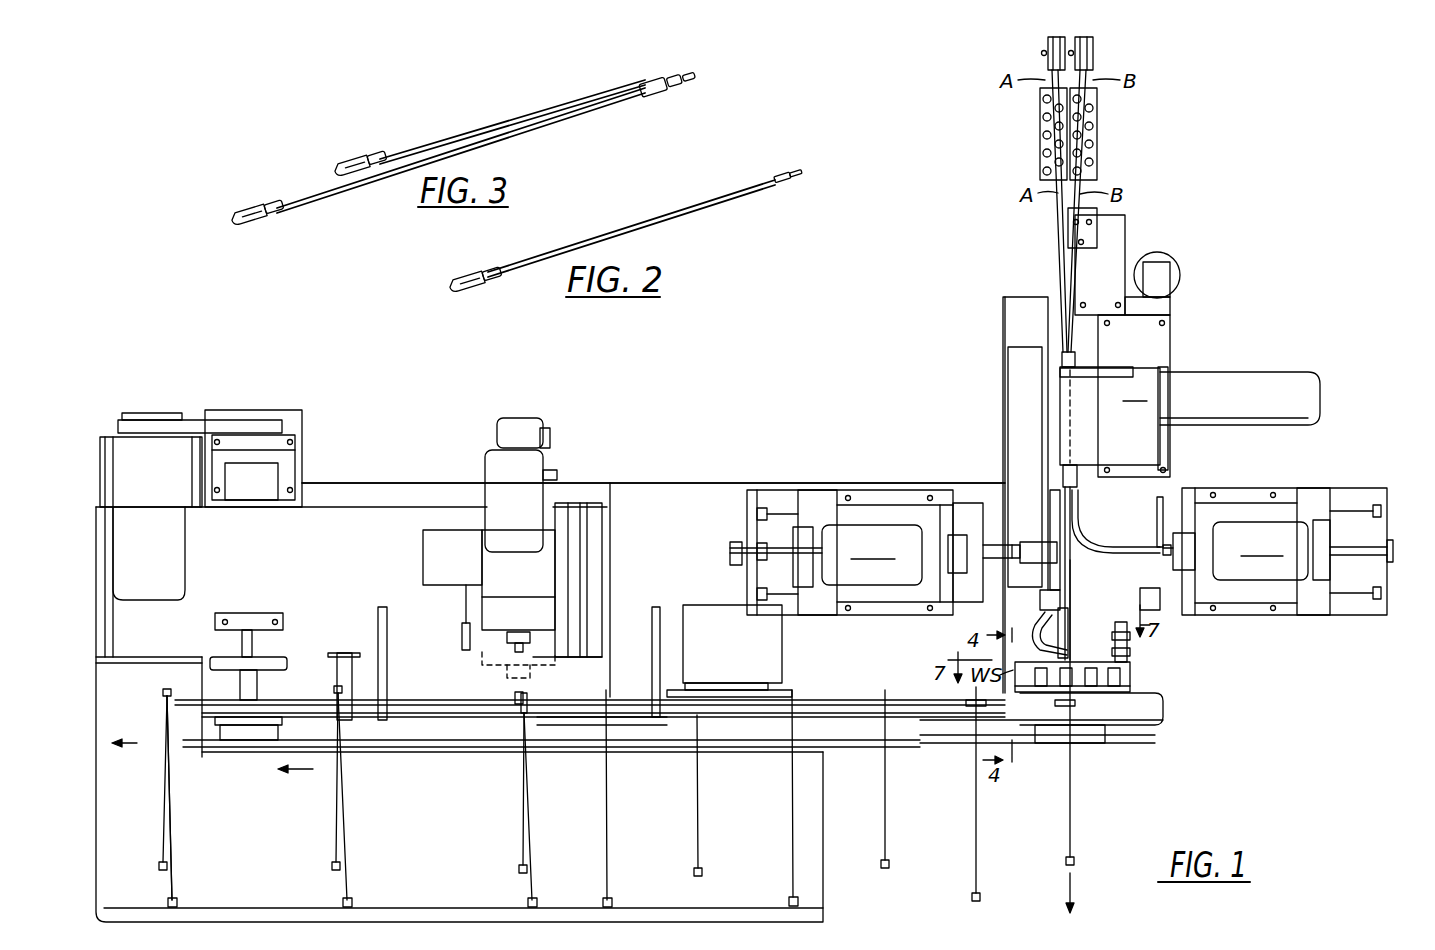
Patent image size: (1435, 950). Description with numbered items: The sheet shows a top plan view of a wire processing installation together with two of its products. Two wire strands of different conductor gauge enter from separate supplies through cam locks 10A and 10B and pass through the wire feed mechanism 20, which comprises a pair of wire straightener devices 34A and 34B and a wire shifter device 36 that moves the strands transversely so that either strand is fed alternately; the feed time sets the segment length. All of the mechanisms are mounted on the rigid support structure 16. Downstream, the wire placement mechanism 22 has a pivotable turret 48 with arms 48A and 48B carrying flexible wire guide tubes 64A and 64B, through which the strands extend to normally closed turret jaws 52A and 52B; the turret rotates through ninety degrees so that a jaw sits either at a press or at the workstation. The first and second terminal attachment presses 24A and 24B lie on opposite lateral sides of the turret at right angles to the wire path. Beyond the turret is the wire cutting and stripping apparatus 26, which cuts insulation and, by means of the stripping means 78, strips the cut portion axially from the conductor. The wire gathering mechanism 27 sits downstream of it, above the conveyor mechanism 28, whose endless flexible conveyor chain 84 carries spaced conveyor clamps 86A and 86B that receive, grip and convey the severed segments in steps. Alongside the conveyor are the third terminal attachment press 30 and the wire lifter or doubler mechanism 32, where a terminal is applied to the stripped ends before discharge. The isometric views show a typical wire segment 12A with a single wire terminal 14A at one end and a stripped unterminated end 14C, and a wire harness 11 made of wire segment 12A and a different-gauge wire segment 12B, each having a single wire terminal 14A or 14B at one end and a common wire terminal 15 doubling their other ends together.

In FIG. 1, the cam lock 10A is at (1048, 42).
In FIG. 1, the cam lock 10B is at (1095, 40).
In FIG. 1, the wire straightener device 34A is at (1040, 126).
In FIG. 1, the wire straightener device 34B is at (1097, 126).
In FIG. 1, the wire shifter device 36 is at (1125, 367).
In FIG. 1, the wire feed mechanism 20 is at (1190, 418).
In FIG. 1, the rigid support structure 16 is at (757, 481).
In FIG. 1, the flexible wire guide tube 64A is at (1068, 490).
In FIG. 1, the flexible wire guide tube 64B is at (1078, 490).
In FIG. 1, the turret jaw 52B is at (1160, 537).
In FIG. 1, the pivotable turret 48 is at (1028, 540).
In FIG. 1, the wire placement mechanism 22 is at (1088, 530).
In FIG. 1, the first terminal attachment press 24A is at (871, 552).
In FIG. 1, the second terminal attachment press 24B is at (1278, 551).
In FIG. 1, the third terminal attachment press 30 is at (480, 601).
In FIG. 1, the wire lifter or doubler mechanism 32 is at (487, 703).
In FIG. 1, the conveyor mechanism 28 is at (837, 693).
In FIG. 1, the turret arm 48A is at (1048, 600).
In FIG. 1, the turret arm 48B is at (1150, 600).
In FIG. 1, the turret jaw 52A is at (1067, 655).
In FIG. 1, the stripping means 78 is at (1133, 648).
In FIG. 1, the wire cutting and stripping apparatus 26 is at (1133, 682).
In FIG. 1, the endless flexible conveyor chain 84 is at (1162, 707).
In FIG. 1, the wire gathering mechanism 27 is at (1100, 717).
In FIG. 1, the conveyor clamp 86A is at (1058, 703).
In FIG. 1, the conveyor clamp 86B is at (970, 702).
In FIG. 1, the wire segment 12A is at (1072, 837).
In FIG. 2, the wire segment 12A is at (700, 183).
In FIG. 3, the wire segment 12A is at (518, 115).
In FIG. 1, the wire segment 12B is at (978, 837).
In FIG. 3, the wire segment 12B is at (552, 127).
In FIG. 1, the wire harness 11 is at (160, 818).
In FIG. 3, the wire harness 11 is at (441, 129).
In FIG. 2, the single wire terminal 14A is at (476, 272).
In FIG. 3, the single wire terminal 14A is at (357, 152).
In FIG. 3, the single wire terminal 14B is at (248, 197).
In FIG. 2, the stripped unterminated end 14C is at (793, 170).
In FIG. 3, the common wire terminal 15 is at (695, 89).